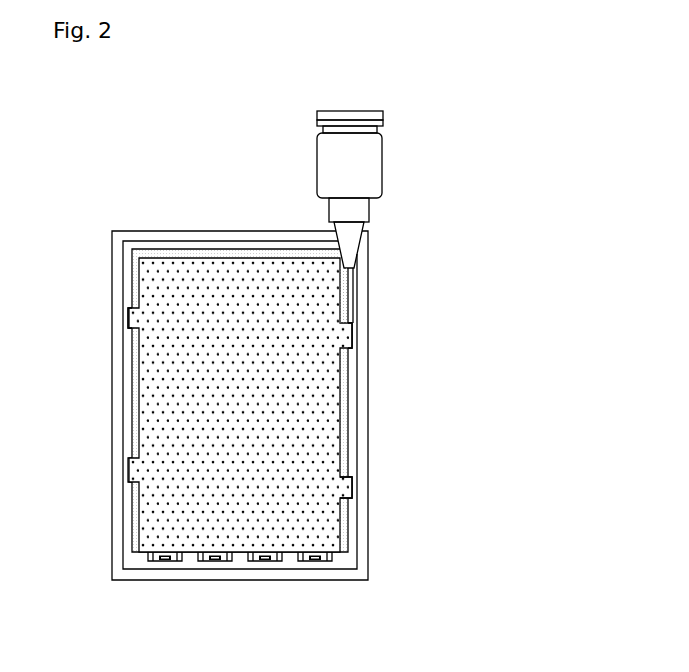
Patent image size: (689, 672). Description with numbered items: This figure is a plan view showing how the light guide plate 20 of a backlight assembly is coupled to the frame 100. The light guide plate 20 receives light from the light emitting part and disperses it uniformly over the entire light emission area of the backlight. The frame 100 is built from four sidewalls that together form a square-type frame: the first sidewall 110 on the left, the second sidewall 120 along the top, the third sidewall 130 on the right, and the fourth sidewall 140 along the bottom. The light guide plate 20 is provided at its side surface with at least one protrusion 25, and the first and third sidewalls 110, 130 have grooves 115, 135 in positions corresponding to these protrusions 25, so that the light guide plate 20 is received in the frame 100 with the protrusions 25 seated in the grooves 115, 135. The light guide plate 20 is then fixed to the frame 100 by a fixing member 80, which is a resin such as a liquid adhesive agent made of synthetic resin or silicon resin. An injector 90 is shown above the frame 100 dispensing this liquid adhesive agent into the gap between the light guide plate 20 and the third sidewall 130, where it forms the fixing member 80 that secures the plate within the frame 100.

The light guide plate 20 is at (332, 537).
The protrusion 25 is at (343, 490).
The fixing member 80 is at (345, 287).
The injector 90 is at (352, 105).
The frame 100 is at (404, 249).
The first sidewall 110 is at (118, 287).
The groove 115 is at (128, 320).
The second sidewall 120 is at (222, 238).
The third sidewall 130 is at (363, 398).
The groove 135 is at (353, 321).
The fourth sidewall 140 is at (242, 575).